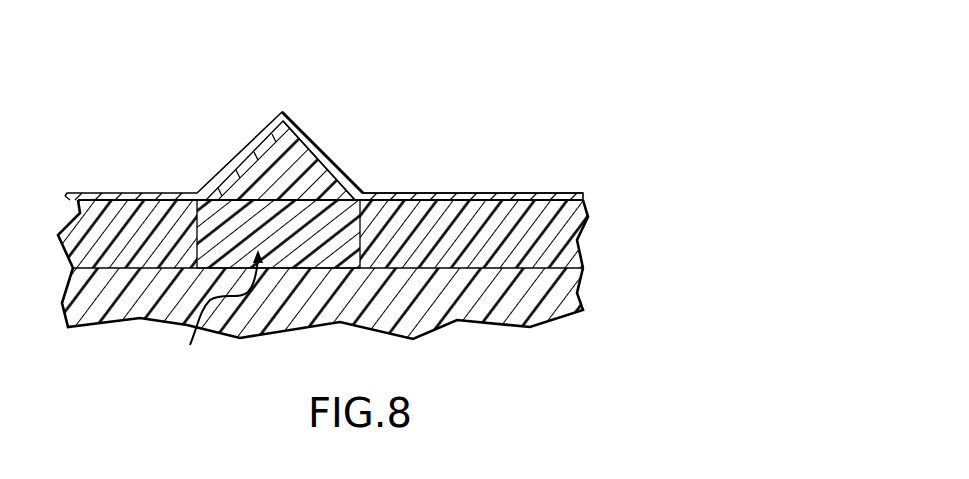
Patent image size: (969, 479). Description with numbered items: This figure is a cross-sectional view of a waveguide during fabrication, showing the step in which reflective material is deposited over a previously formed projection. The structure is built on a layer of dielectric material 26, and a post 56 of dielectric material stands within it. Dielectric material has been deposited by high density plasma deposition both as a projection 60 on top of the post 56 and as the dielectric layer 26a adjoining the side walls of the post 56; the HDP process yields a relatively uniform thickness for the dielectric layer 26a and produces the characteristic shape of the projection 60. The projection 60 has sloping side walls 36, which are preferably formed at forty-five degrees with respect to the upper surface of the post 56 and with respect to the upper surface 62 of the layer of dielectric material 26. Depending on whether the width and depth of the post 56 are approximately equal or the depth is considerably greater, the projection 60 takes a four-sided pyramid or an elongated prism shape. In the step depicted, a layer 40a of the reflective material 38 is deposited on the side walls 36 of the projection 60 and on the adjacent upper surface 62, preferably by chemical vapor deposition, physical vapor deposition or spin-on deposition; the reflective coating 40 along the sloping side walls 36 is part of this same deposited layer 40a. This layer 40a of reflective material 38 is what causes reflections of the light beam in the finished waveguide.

The layer of dielectric material 26 is at (583, 297).
The dielectric layer 26a is at (588, 215).
The side walls 36 is at (227, 168).
The reflective material 38 is at (133, 197).
The ridge sidewall portion 40 is at (305, 128).
The layer of reflective material 40a is at (430, 193).
The post 56 is at (219, 311).
The projection 60 is at (280, 167).
The upper surface 62 is at (495, 195).